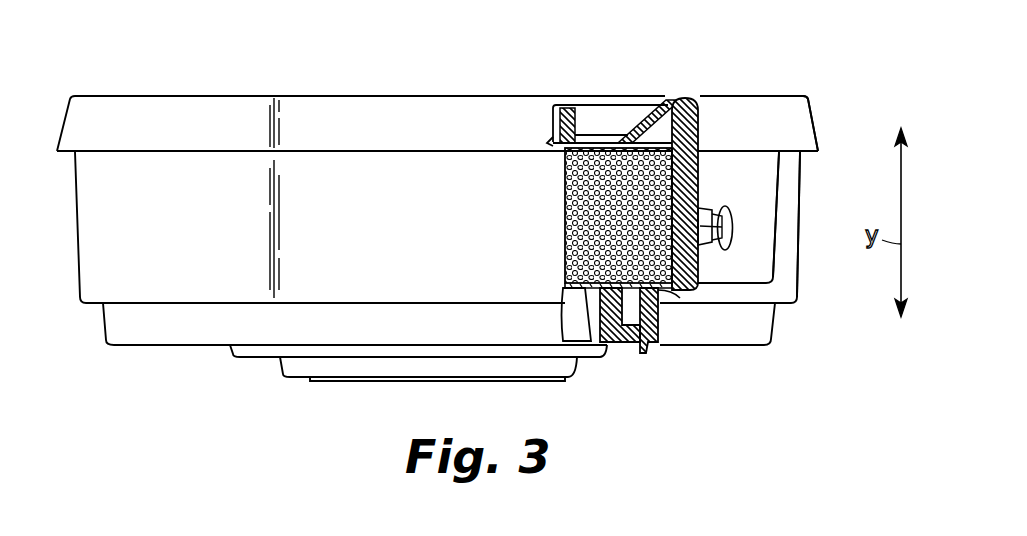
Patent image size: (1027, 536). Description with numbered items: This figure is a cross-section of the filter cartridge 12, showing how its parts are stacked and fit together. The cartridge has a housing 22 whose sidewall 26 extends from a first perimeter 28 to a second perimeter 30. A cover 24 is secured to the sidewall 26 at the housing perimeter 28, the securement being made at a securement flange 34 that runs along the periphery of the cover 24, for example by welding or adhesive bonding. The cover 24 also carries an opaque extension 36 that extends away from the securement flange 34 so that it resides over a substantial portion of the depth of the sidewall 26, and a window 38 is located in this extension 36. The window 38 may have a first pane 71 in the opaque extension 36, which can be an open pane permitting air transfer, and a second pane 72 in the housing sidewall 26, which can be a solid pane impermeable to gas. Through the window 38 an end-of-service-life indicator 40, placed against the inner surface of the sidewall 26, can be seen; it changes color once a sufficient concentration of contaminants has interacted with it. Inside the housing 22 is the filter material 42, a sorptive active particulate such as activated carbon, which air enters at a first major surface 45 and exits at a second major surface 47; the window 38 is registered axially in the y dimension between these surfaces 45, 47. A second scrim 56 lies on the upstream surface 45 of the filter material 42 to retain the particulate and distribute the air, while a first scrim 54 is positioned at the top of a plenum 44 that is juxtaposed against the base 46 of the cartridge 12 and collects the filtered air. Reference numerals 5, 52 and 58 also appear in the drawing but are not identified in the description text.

The filter cartridge 12 is at (774, 49).
The housing 22 is at (150, 330).
The cover 24 is at (447, 97).
The sidewall 26 is at (420, 236).
The first perimeter 28 is at (688, 100).
The second perimeter 30 is at (682, 292).
The securement flange 34 is at (808, 115).
The opaque extension 36 is at (767, 176).
The window 38 is at (705, 238).
The end-of-service-life indicator 40 is at (700, 188).
The filter material 42 is at (630, 245).
The plenum 44 is at (573, 326).
The first major surface 45 is at (622, 143).
The base 46 is at (626, 326).
The second major surface 47 is at (663, 300).
The slot 5 is at (648, 143).
The disc 52 is at (704, 223).
The first scrim 54 is at (602, 305).
The second scrim 56 is at (604, 143).
The cartridge side wall 58 is at (583, 143).
The first pane 71 is at (695, 245).
The second pane 72 is at (693, 262).